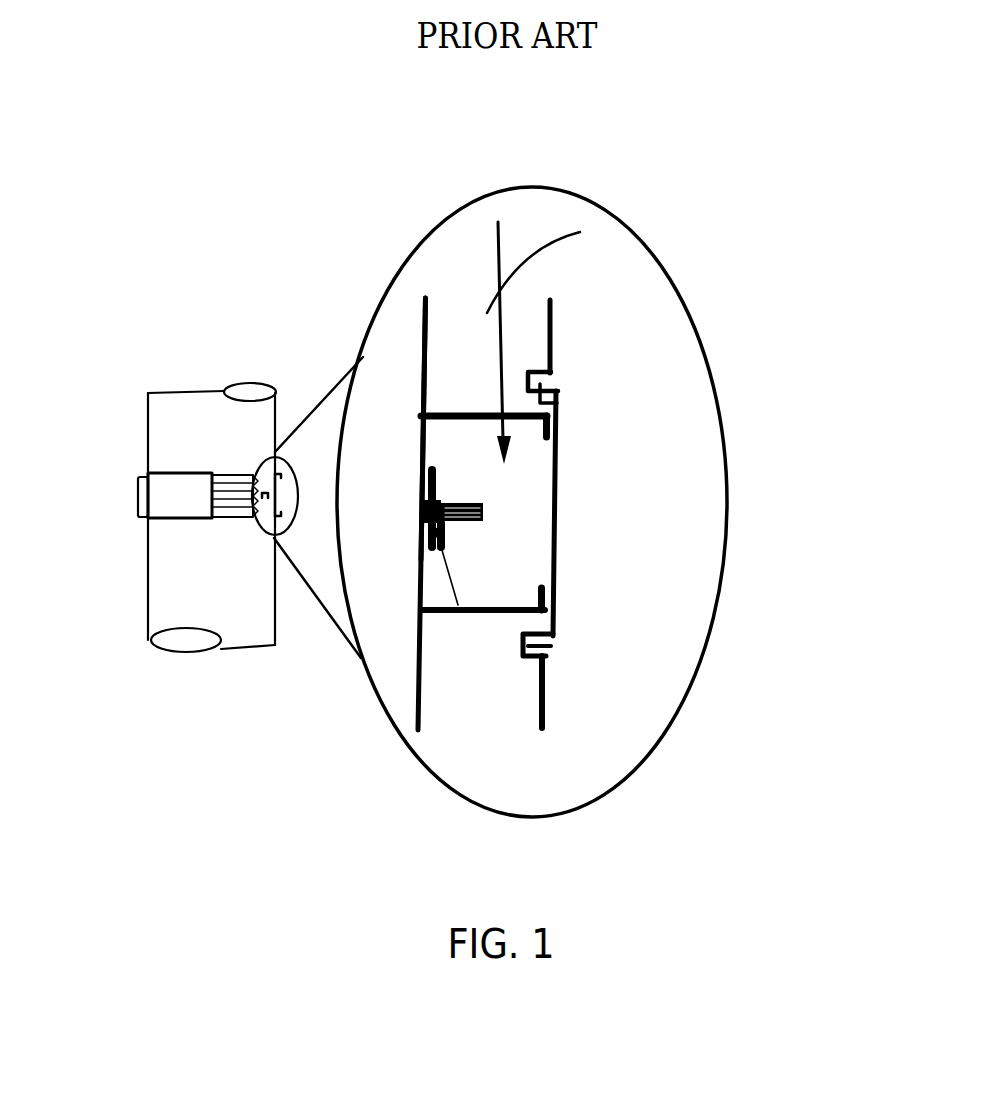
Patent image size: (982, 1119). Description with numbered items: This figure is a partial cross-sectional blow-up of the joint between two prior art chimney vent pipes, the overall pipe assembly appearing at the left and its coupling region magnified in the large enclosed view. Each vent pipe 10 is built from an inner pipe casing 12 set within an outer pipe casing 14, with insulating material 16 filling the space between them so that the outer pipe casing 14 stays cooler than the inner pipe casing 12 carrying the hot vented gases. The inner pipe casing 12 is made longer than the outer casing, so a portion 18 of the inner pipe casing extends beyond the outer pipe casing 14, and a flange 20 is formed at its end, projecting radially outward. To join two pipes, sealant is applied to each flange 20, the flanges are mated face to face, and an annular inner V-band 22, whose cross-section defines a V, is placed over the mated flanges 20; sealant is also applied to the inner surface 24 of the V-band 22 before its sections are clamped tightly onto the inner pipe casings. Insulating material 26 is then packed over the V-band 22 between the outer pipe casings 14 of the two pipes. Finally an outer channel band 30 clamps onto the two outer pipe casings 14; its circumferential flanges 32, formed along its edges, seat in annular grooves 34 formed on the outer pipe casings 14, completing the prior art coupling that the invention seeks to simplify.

The vent pipe 10 is at (157, 436).
The inner pipe casing 12 is at (421, 366).
The outer pipe casing 14 is at (552, 337).
The insulating material 16 is at (606, 210).
The portion of the inner pipe casing 18 is at (413, 445).
The flange 20 is at (450, 497).
The inner V-band 22 is at (464, 531).
The inner surface of the V-band 24 is at (483, 523).
The insulating material 26 is at (527, 536).
The outer channel band 30 is at (560, 508).
The circumferential flanges 32 is at (550, 373).
The annular grooves 34 is at (534, 371).